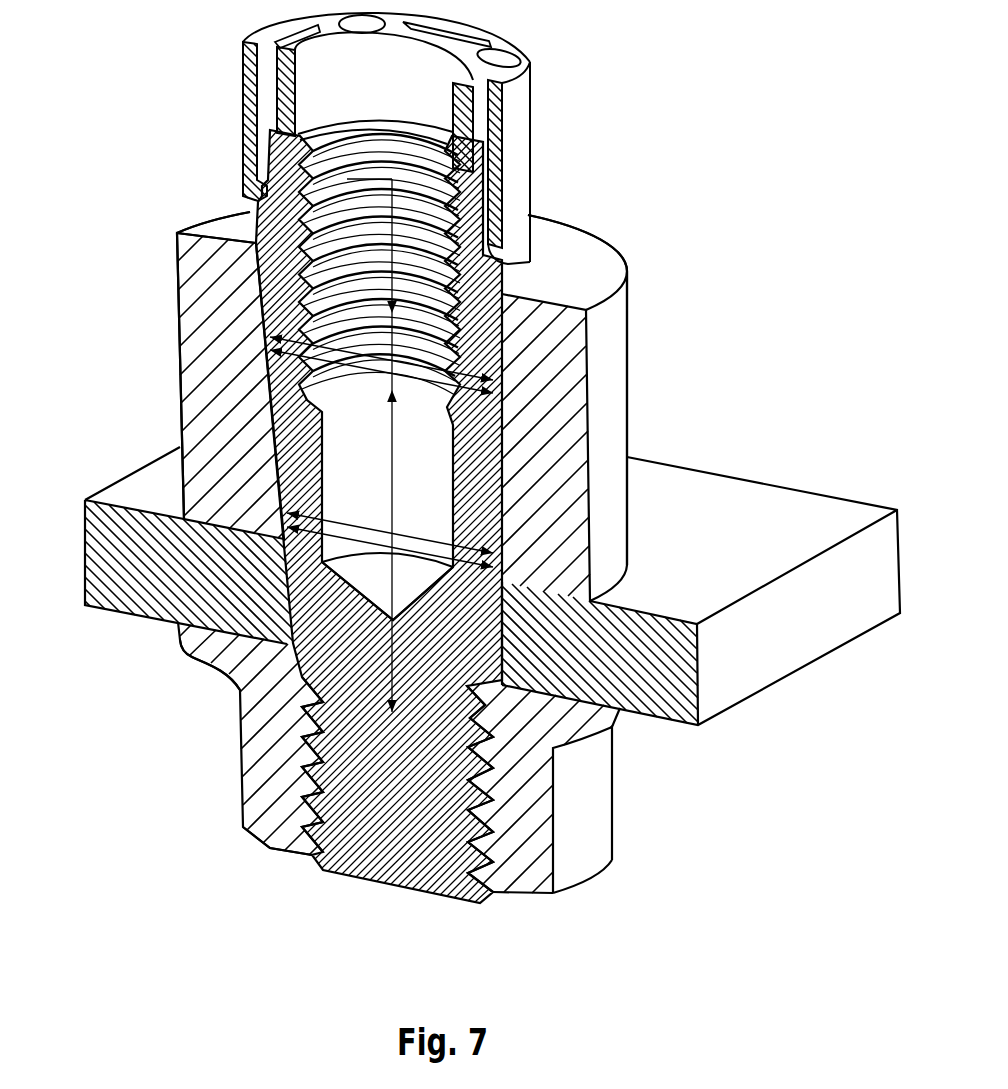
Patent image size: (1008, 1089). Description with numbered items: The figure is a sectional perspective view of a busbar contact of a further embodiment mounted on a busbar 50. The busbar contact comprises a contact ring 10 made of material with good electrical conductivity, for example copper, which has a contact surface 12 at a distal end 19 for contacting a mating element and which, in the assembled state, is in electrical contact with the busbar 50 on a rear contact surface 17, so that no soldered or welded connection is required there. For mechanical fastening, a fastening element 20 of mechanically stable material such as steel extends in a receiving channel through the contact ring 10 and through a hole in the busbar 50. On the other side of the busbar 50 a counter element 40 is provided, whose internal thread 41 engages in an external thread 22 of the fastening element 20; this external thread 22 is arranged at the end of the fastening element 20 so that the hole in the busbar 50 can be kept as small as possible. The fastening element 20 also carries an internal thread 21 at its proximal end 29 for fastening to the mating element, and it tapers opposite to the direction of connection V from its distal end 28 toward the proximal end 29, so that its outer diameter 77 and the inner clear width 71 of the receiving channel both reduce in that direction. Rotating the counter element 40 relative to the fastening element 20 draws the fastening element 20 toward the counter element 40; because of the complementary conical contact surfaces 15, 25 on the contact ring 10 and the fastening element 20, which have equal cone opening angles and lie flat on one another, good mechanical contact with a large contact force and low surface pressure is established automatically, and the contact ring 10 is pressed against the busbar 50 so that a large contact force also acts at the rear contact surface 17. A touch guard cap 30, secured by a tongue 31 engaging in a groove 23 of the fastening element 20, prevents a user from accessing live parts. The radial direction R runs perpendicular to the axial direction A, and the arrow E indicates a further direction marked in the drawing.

The contact ring 10 is at (650, 343).
The contact surface 12 is at (586, 256).
The conical contact surfaces 15 is at (262, 349).
The rear contact surface 17 is at (520, 592).
The distal end 19 is at (195, 267).
The fastening element 20 is at (292, 433).
The internal thread 21 is at (458, 200).
The external thread 22 is at (322, 790).
The groove 23 is at (523, 250).
The conical contact surfaces 25 is at (262, 336).
The distal end 28 is at (470, 876).
The proximal end 29 is at (492, 162).
The touch guard cap 30 is at (247, 97).
The tongue 31 is at (258, 196).
The counter element 40 is at (625, 800).
The internal thread 41 is at (303, 833).
The busbar 50 is at (848, 522).
The inner clear width 71 is at (290, 333).
The outer diameter 77 is at (503, 427).
The axial direction A is at (217, 213).
The radial direction R is at (352, 176).
The direction of connection V is at (393, 528).
The axial direction reference E is at (414, 551).